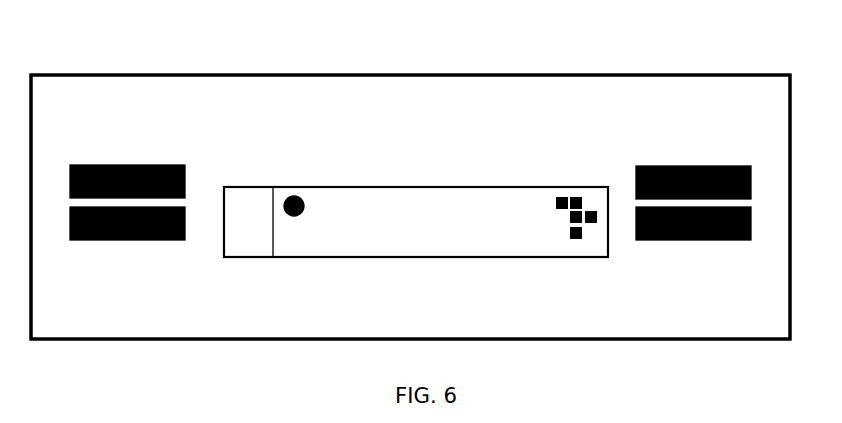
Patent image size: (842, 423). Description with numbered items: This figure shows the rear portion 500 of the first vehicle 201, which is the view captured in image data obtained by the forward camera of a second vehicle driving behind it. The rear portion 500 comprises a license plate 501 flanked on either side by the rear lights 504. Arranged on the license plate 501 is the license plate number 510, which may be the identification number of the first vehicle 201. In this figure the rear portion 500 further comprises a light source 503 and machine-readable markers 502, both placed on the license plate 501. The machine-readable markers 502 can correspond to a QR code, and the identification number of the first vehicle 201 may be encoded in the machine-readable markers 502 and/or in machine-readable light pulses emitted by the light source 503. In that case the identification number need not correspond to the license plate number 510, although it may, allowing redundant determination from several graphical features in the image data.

The first vehicle 201 is at (69, 56).
The rear portion 500 is at (410, 207).
The rear lights 504 is at (40, 178).
The license plate 501 is at (242, 157).
The light source 503 is at (303, 197).
The license plate number 510 is at (437, 191).
The machine-readable markers 502 is at (590, 191).